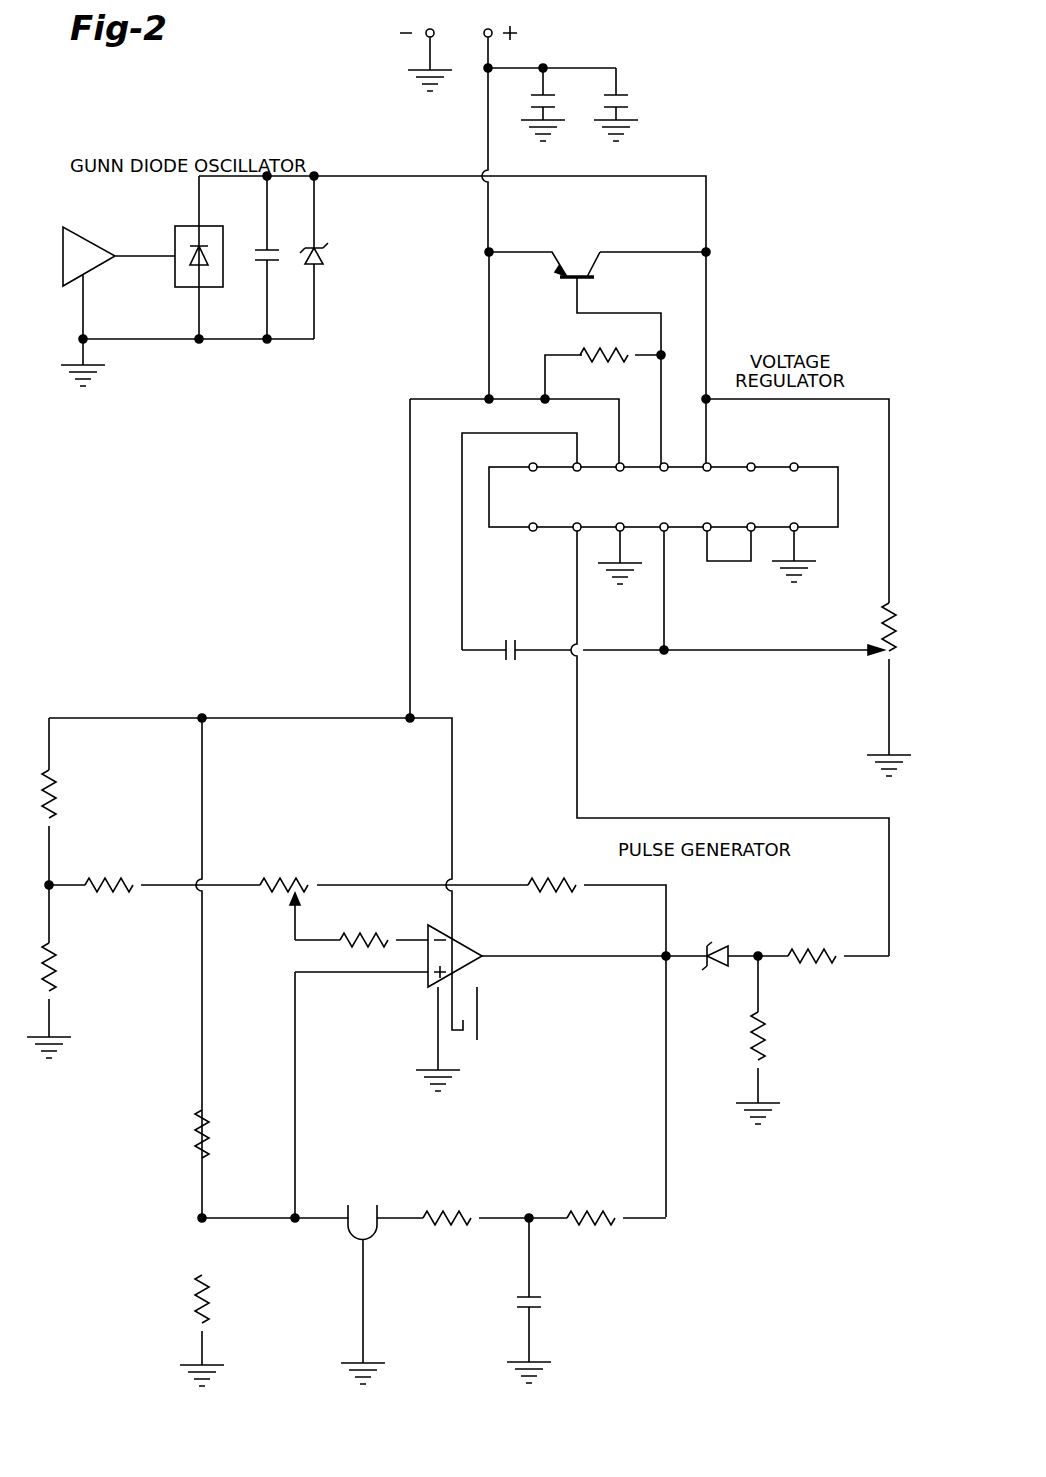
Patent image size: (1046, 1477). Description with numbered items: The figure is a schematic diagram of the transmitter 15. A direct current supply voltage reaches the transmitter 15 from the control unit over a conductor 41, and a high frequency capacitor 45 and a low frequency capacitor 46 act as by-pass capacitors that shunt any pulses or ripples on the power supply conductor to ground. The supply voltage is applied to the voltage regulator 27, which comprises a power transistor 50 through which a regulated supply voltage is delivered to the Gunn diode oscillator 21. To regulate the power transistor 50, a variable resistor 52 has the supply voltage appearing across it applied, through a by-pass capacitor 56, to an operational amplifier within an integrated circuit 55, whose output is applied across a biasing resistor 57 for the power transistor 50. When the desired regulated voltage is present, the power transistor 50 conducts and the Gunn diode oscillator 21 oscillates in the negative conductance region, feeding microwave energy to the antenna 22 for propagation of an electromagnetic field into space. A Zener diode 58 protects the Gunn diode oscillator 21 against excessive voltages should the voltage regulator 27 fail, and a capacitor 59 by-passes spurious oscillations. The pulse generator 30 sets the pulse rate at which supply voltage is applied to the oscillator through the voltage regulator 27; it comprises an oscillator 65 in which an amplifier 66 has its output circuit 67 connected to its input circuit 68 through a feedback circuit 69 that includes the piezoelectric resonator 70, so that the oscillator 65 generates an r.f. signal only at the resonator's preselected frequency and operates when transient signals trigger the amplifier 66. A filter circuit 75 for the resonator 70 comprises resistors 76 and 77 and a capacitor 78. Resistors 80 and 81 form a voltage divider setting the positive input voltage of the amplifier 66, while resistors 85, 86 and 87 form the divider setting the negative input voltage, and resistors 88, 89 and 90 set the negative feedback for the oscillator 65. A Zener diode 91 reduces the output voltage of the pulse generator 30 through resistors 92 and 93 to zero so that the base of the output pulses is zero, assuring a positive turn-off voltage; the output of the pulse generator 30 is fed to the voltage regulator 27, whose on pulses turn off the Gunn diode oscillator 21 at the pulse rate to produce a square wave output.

The transmitter 15 is at (340, 652).
The Gunn diode oscillator 21 is at (200, 342).
The antenna 22 is at (78, 244).
The voltage regulator 27 is at (727, 234).
The pulse generator 30 is at (680, 922).
The conductor 41 is at (484, 68).
The high frequency capacitor 45 is at (547, 95).
The low frequency capacitor 46 is at (622, 96).
The power transistor 50 is at (592, 282).
The variable resistor 52 is at (882, 676).
The integrated circuit 55 is at (813, 465).
The by-pass capacitor 56 is at (503, 656).
The biasing resistor 57 is at (608, 350).
The Zener diode 58 is at (328, 255).
The capacitor 59 is at (272, 247).
The oscillator 65 is at (280, 970).
The amplifier 66 is at (470, 946).
The output circuit 67 is at (612, 960).
The input circuit 68 is at (410, 944).
The feedback circuit 69 is at (677, 1166).
The piezoelectric resonator 70 is at (345, 1232).
The filter circuit 75 is at (534, 1222).
The resistor 76 is at (600, 1212).
The resistor 77 is at (470, 1228).
The capacitor 78 is at (518, 1297).
The resistor 80 is at (198, 1142).
The resistor 81 is at (196, 1292).
The resistor 85 is at (62, 818).
The resistor 86 is at (121, 878).
The resistor 87 is at (58, 962).
The resistor 88 is at (294, 882).
The resistor 89 is at (352, 936).
The resistor 90 is at (540, 880).
The Zener diode 91 is at (725, 950).
The resistor 92 is at (836, 950).
The resistor 93 is at (766, 1036).